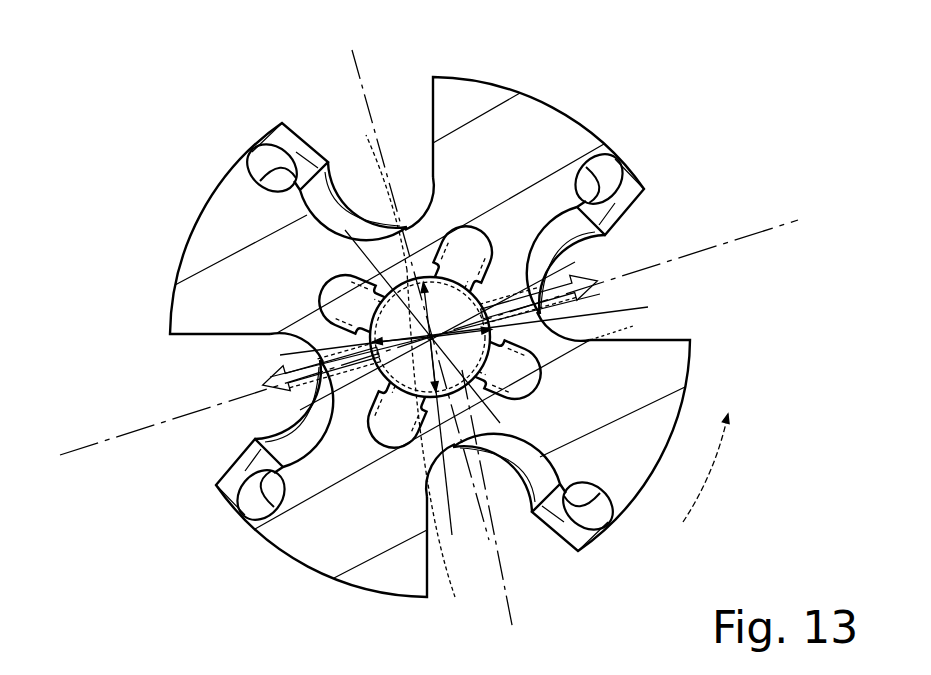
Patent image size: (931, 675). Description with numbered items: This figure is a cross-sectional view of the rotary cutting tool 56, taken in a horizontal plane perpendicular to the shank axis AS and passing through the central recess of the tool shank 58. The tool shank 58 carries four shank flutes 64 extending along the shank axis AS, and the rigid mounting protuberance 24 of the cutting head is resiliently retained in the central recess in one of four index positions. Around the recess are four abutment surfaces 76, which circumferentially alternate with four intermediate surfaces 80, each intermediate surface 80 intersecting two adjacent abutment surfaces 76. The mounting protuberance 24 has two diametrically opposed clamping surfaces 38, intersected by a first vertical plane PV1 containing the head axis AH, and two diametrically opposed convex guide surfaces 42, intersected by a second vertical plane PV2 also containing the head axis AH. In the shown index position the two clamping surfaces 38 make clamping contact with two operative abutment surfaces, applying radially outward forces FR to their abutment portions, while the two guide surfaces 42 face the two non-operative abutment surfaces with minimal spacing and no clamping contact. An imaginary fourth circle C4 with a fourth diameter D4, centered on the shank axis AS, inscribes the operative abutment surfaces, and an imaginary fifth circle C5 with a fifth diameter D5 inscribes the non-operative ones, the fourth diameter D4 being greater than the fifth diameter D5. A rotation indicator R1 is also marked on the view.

The rotary cutting tool 56 is at (248, 121).
The tool shank 58 is at (522, 134).
The shank flutes 64 is at (407, 115).
The guide surfaces 42 is at (400, 222).
The mounting protuberance 24 is at (418, 237).
The intermediate surface 80 is at (392, 413).
The head axis AH is at (505, 258).
The shank axis AS is at (464, 256).
The abutment surfaces 76 is at (431, 336).
The clamping surfaces 38 is at (323, 350).
The fourth diameter D4 is at (478, 324).
The fifth diameter D5 is at (452, 449).
The fourth circle C4 is at (458, 421).
The fifth circle C5 is at (419, 379).
The first vertical plane PV1 is at (428, 342).
The second vertical plane PV2 is at (423, 343).
The radially outward forces FR is at (435, 336).
The rotation direction R1 is at (715, 457).